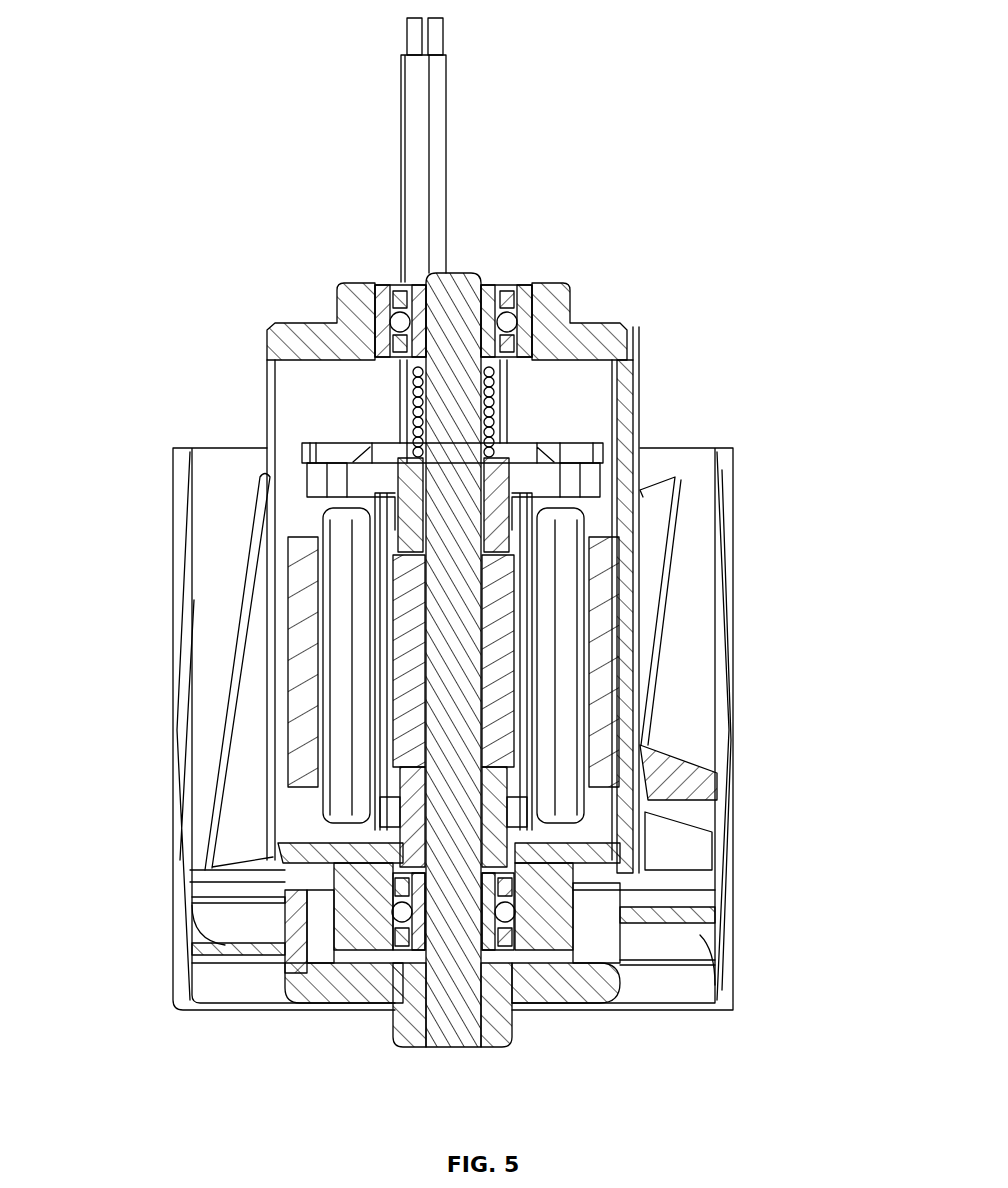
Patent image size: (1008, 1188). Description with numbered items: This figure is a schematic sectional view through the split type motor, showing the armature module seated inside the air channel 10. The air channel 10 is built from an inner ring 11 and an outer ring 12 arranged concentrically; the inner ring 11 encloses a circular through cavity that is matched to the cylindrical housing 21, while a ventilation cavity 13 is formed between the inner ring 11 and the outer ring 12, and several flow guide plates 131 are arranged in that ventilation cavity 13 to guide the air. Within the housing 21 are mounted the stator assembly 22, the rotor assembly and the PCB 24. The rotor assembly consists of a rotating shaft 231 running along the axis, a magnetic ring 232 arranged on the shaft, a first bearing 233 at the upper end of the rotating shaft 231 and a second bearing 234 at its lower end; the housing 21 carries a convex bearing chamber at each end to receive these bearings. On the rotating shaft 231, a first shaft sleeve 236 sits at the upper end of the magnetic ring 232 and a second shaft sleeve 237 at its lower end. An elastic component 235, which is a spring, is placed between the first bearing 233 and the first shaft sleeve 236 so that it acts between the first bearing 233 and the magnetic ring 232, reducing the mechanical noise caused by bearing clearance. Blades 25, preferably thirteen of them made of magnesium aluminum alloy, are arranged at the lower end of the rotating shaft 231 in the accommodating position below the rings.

The air channel 10 is at (517, 668).
The inner ring 11 is at (634, 465).
The outer ring 12 is at (730, 530).
The ventilation cavity 13 is at (689, 692).
The flow guide plates 131 is at (657, 571).
The housing 21 is at (590, 345).
The stator assembly 22 is at (288, 525).
The rotating shaft 231 is at (450, 1012).
The magnetic ring 232 is at (407, 668).
The first bearing 233 is at (517, 297).
The second bearing 234 is at (388, 917).
The elastic component 235 is at (412, 407).
The first shaft sleeve 236 is at (407, 488).
The second shaft sleeve 237 is at (413, 830).
The PCB 24 is at (337, 450).
The blades 25 is at (410, 1012).